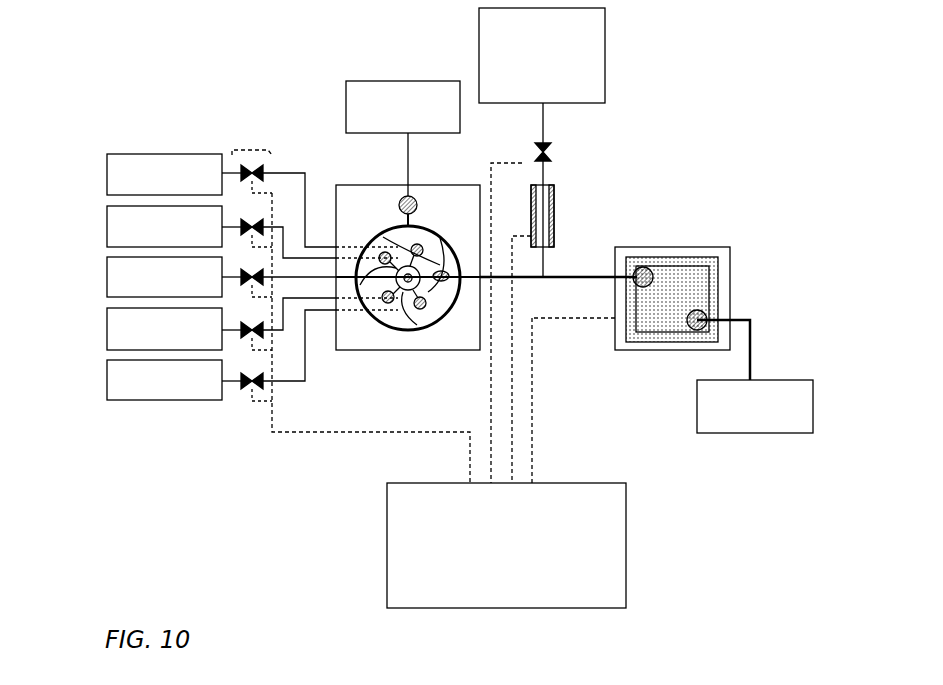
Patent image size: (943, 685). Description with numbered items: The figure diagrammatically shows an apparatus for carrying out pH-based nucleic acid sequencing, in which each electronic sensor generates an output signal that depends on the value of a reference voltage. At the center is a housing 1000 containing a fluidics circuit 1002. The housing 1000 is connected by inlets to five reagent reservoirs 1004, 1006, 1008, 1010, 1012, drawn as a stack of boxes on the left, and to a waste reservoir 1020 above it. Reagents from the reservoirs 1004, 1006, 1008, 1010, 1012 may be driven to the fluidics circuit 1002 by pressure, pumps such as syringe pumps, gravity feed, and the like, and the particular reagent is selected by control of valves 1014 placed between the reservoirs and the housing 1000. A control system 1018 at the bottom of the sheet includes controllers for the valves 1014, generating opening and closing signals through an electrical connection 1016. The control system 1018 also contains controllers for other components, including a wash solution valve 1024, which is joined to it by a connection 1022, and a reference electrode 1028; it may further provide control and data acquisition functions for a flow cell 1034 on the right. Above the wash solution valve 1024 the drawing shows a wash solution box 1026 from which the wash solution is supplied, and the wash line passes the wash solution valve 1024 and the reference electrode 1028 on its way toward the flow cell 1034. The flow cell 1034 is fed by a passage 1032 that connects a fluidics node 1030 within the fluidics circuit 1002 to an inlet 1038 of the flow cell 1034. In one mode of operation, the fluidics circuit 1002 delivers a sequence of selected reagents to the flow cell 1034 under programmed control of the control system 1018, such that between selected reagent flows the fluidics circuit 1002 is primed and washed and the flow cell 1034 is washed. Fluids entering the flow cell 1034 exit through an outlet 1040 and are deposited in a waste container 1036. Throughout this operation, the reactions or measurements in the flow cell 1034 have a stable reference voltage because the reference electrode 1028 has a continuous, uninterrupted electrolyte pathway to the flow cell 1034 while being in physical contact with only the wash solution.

The housing 1000 is at (367, 183).
The fluidics circuit 1002 is at (426, 216).
The reagent reservoir 1004 is at (107, 174).
The reagent reservoir 1006 is at (107, 227).
The reagent reservoir 1008 is at (107, 277).
The reagent reservoir 1010 is at (107, 330).
The reagent reservoir 1012 is at (107, 380).
The valves 1014 is at (250, 145).
The electrical connection 1016 is at (312, 437).
The control system 1018 is at (628, 533).
The waste reservoir 1020 is at (375, 80).
The connection 1022 is at (517, 165).
The wash solution valve 1024 is at (558, 146).
The wash solution reservoir 1026 is at (607, 50).
The reference electrode 1028 is at (555, 225).
The fluidics node 1030 is at (409, 282).
The passage 1032 is at (563, 275).
The flow cell 1034 is at (699, 224).
The waste container 1036 is at (770, 378).
The inlet 1038 is at (644, 268).
The outlet 1040 is at (705, 315).